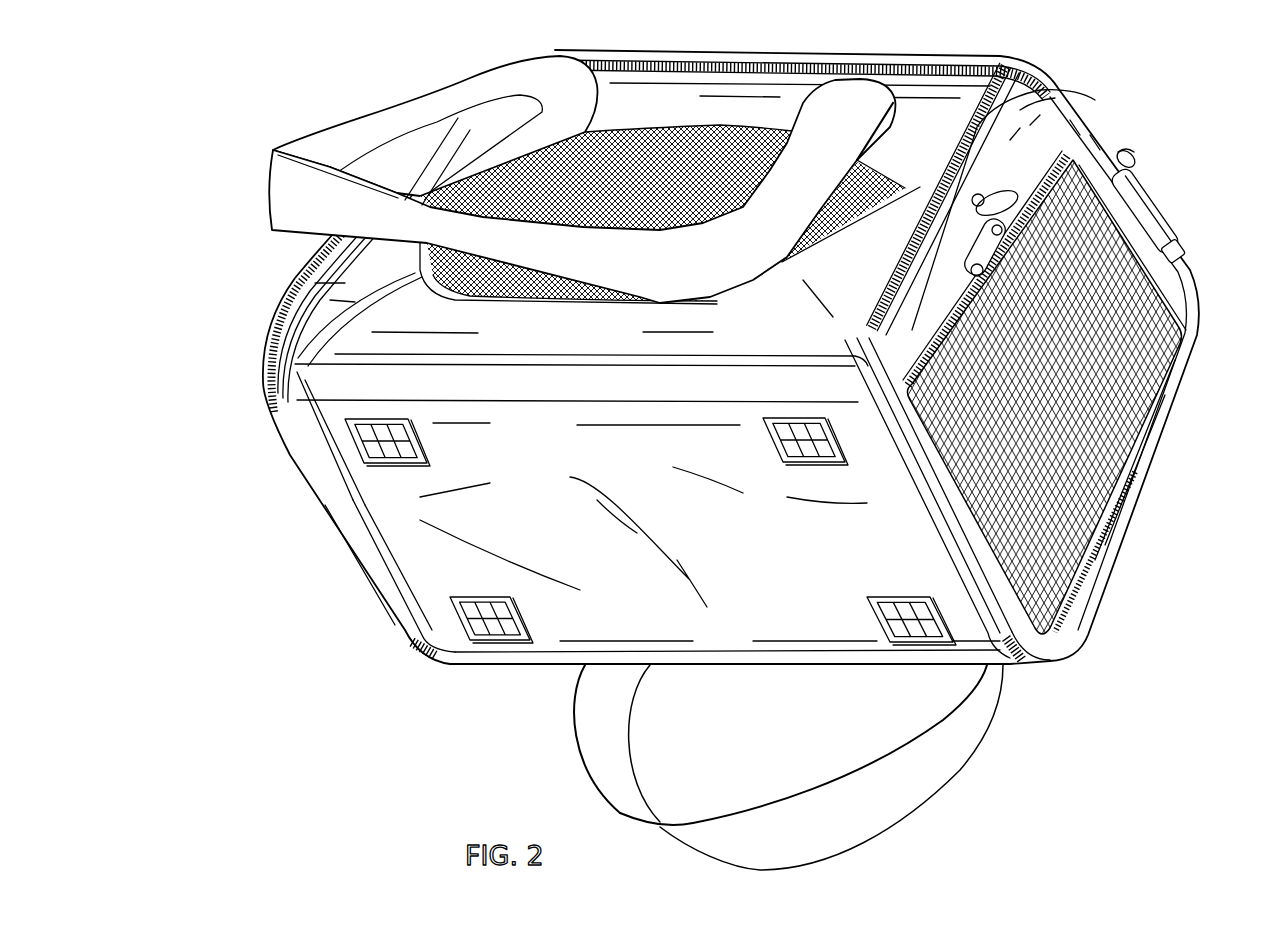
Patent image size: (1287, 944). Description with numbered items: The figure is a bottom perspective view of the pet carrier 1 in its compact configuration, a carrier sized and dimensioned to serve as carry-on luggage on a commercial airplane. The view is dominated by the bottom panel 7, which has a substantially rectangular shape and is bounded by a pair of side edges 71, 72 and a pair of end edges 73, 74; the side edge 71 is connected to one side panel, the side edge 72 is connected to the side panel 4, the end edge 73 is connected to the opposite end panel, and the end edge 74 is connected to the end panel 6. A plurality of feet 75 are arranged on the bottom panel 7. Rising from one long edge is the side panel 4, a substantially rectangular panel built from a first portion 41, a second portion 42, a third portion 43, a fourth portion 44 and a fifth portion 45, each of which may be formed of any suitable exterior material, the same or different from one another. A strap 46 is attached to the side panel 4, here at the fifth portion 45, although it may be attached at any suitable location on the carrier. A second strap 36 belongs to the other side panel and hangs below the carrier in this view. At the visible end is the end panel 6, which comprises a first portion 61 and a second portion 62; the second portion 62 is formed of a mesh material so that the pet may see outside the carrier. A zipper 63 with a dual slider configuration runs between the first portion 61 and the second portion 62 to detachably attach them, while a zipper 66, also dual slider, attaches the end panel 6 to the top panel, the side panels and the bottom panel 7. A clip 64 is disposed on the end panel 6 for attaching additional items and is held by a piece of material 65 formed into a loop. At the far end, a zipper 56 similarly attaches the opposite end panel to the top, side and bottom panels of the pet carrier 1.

The pet carrier 1 is at (430, 80).
The side panel 4 is at (488, 137).
The zipper 56 is at (388, 162).
The strap 46 is at (287, 195).
The first portion 41 is at (340, 257).
The second portion 42 is at (268, 318).
The third portion 43 is at (268, 332).
The fourth portion 44 is at (830, 282).
The fifth portion 45 is at (1057, 58).
The end panel 6 is at (1060, 123).
The zipper 63 is at (1010, 193).
The zipper 66 is at (1130, 163).
The piece of material 65 is at (1147, 217).
The clip 64 is at (1173, 247).
The first portion 61 is at (1147, 340).
The second portion 62 is at (1120, 508).
The side edge 72 is at (338, 383).
The end edge 73 is at (357, 578).
The feet 75 is at (380, 457).
The bottom panel 7 is at (795, 627).
The end edge 74 is at (1048, 657).
The side edge 71 is at (1013, 666).
The strap 36 is at (935, 795).